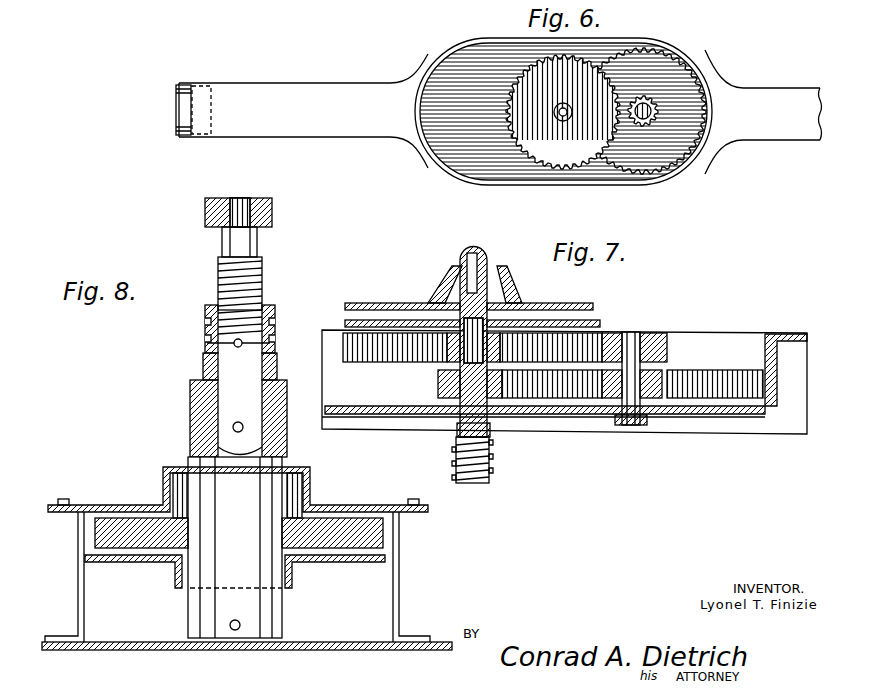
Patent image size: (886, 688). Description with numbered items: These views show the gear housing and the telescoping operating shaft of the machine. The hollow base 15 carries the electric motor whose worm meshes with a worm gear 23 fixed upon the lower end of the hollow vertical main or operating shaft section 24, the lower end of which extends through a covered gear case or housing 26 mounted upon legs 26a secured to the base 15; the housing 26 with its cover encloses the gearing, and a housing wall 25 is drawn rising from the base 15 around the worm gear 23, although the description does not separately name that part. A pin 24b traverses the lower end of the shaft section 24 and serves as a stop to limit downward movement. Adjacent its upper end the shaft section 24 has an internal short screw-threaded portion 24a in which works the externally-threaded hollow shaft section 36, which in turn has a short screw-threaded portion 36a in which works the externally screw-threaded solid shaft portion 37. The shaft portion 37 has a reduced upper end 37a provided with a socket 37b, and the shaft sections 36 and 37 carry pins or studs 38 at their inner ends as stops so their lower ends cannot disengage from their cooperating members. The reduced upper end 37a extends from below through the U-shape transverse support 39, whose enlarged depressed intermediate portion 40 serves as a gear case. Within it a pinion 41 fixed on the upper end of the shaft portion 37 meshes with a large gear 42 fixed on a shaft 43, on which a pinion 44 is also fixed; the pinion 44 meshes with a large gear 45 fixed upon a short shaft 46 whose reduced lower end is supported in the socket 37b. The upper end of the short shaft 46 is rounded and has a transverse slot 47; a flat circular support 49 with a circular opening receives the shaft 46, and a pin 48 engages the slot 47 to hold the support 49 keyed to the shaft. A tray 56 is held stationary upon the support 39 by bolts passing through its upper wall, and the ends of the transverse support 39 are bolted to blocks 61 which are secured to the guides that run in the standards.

In FIG. 8, the hollow base 15 is at (346, 634).
In FIG. 8, the worm gear 23 is at (345, 518).
In FIG. 8, the hollow vertical main or operating shaft section 24 is at (280, 442).
In FIG. 8, the screw-threaded portion 24a is at (279, 388).
In FIG. 8, the pin 24b is at (230, 625).
In FIG. 8, the housing 25 is at (399, 586).
In FIG. 8, the covered gear case or housing 26 is at (129, 505).
In FIG. 8, the legs 26a is at (300, 487).
In FIG. 8, the externally-threaded hollow shaft section 36 is at (276, 335).
In FIG. 8, the screw-threaded portion 36a is at (275, 319).
In FIG. 7, the externally screw-threaded solid shaft portion 37 is at (490, 468).
In FIG. 8, the externally screw-threaded solid shaft portion 37 is at (262, 290).
In FIG. 7, the reduced upper end 37a is at (492, 431).
In FIG. 8, the reduced upper end 37a is at (232, 214).
In FIG. 7, the socket 37b is at (459, 426).
In FIG. 8, the socket 37b is at (240, 241).
In FIG. 8, the pins or studs 38 is at (207, 345).
In FIG. 6, the U-shape transverse support 39 is at (345, 136).
In FIG. 7, the U-shape transverse support 39 is at (604, 427).
In FIG. 6, the enlarged depressed intermediate portion 40 is at (447, 73).
In FIG. 7, the enlarged depressed intermediate portion 40 is at (772, 335).
In FIG. 6, the pinion 41 is at (563, 131).
In FIG. 7, the pinion 41 is at (438, 383).
In FIG. 8, the pinion 41 is at (248, 199).
In FIG. 6, the large gear 42 is at (646, 58).
In FIG. 7, the large gear 42 is at (717, 370).
In FIG. 6, the shaft 43 is at (648, 103).
In FIG. 7, the shaft 43 is at (638, 334).
In FIG. 6, the pinion 44 is at (650, 122).
In FIG. 7, the pinion 44 is at (662, 341).
In FIG. 6, the large gear 45 is at (523, 125).
In FIG. 7, the large gear 45 is at (362, 363).
In FIG. 6, the short shaft 46 is at (562, 103).
In FIG. 7, the short shaft 46 is at (461, 262).
In FIG. 7, the transverse slot 47 is at (472, 254).
In FIG. 7, the pin 48 is at (480, 292).
In FIG. 7, the flat circular support 49 is at (586, 298).
In FIG. 7, the tray 56 is at (598, 326).
In FIG. 6, the blocks 61 is at (176, 110).